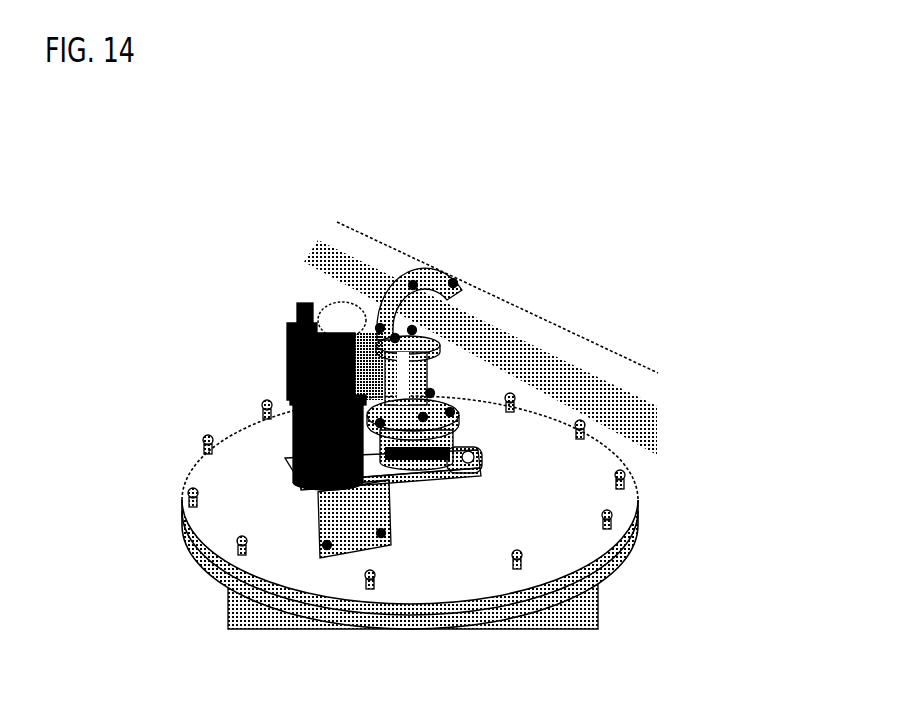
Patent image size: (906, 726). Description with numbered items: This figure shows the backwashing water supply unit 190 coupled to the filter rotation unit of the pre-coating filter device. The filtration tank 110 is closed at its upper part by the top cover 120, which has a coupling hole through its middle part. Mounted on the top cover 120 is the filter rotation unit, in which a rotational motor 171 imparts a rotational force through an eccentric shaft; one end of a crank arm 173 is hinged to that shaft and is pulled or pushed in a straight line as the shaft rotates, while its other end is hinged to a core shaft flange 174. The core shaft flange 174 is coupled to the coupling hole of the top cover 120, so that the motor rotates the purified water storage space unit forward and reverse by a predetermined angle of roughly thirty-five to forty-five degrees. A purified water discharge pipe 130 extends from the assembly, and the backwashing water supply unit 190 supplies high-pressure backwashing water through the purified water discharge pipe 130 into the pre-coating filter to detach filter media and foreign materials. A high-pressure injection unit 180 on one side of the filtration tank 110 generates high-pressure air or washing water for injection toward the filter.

The filtration tank 110 is at (238, 610).
The top cover 120 is at (623, 513).
The purified water discharge pipe 130 is at (527, 343).
The rotational motor 171 is at (300, 450).
The crank arm 173 is at (407, 487).
The core shaft flange 174 is at (447, 457).
The high-pressure injection unit 180 is at (293, 362).
The backwashing water supply unit 190 is at (380, 272).